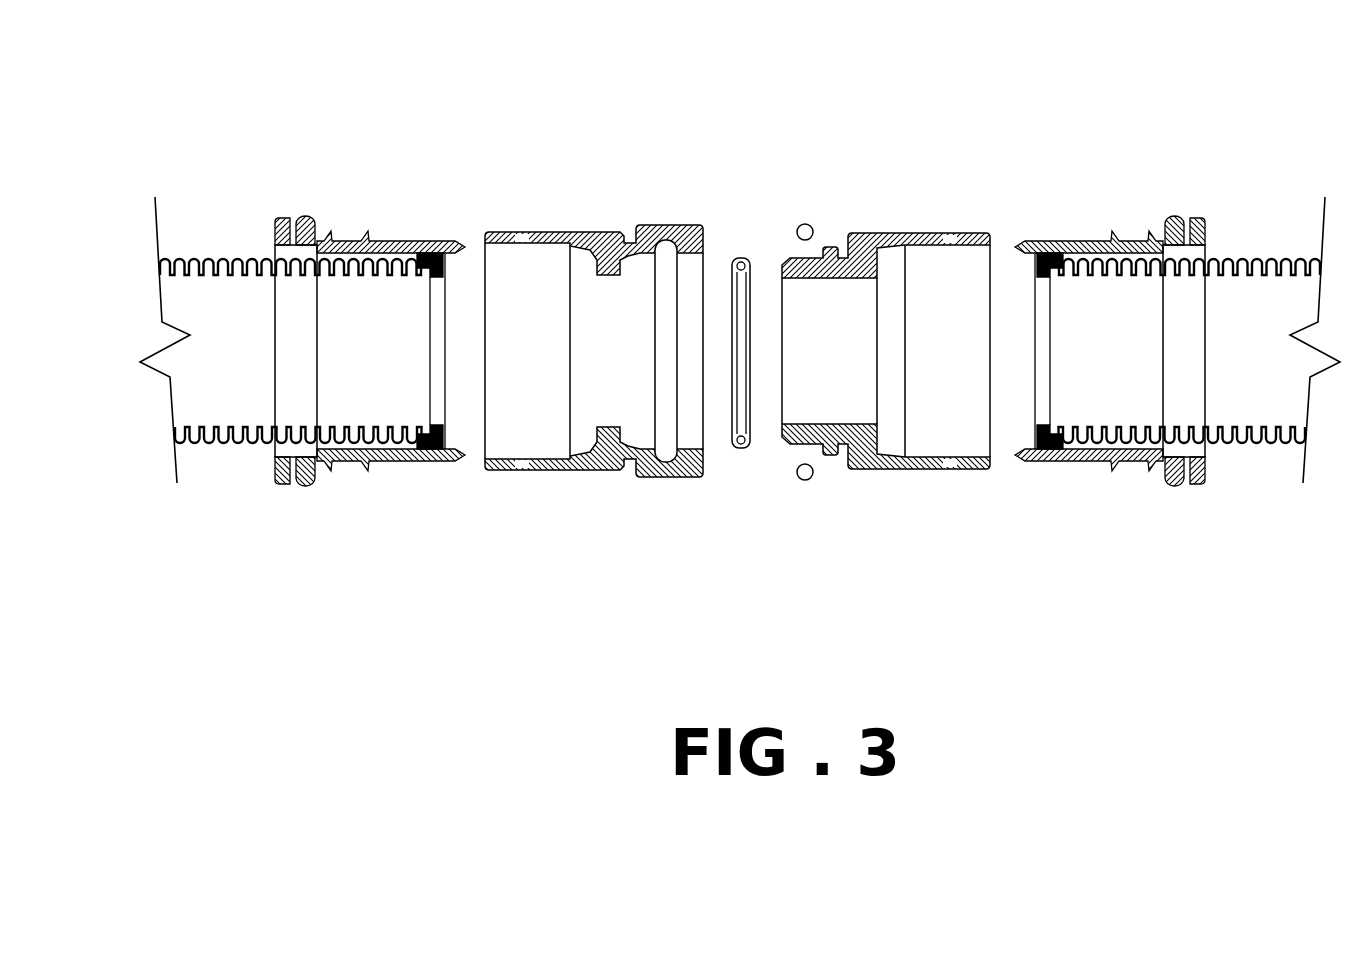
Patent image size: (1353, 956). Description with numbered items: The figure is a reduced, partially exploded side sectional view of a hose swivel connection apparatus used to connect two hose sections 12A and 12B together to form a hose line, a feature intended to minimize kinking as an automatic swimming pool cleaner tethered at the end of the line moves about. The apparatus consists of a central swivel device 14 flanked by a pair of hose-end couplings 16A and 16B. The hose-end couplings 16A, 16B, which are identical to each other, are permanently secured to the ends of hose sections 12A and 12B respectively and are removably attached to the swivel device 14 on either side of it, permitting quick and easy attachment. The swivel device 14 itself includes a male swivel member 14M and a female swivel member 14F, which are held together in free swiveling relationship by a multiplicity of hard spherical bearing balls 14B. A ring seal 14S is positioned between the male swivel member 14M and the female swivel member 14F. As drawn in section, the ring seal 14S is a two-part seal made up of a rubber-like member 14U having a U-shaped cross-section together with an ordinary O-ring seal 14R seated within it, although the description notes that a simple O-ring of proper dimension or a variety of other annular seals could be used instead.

The hose section 12A is at (228, 441).
The hose section 12B is at (1227, 441).
The swivel device 14 is at (985, 133).
The female swivel member 14F is at (570, 463).
The male swivel member 14M is at (913, 232).
The O-ring seal 14R is at (747, 258).
The ring seal 14S is at (741, 258).
The rubber-like member 14U is at (732, 408).
The bearing balls 14B is at (810, 226).
The hose-end coupling 16A is at (347, 243).
The hose-end coupling 16B is at (1195, 225).